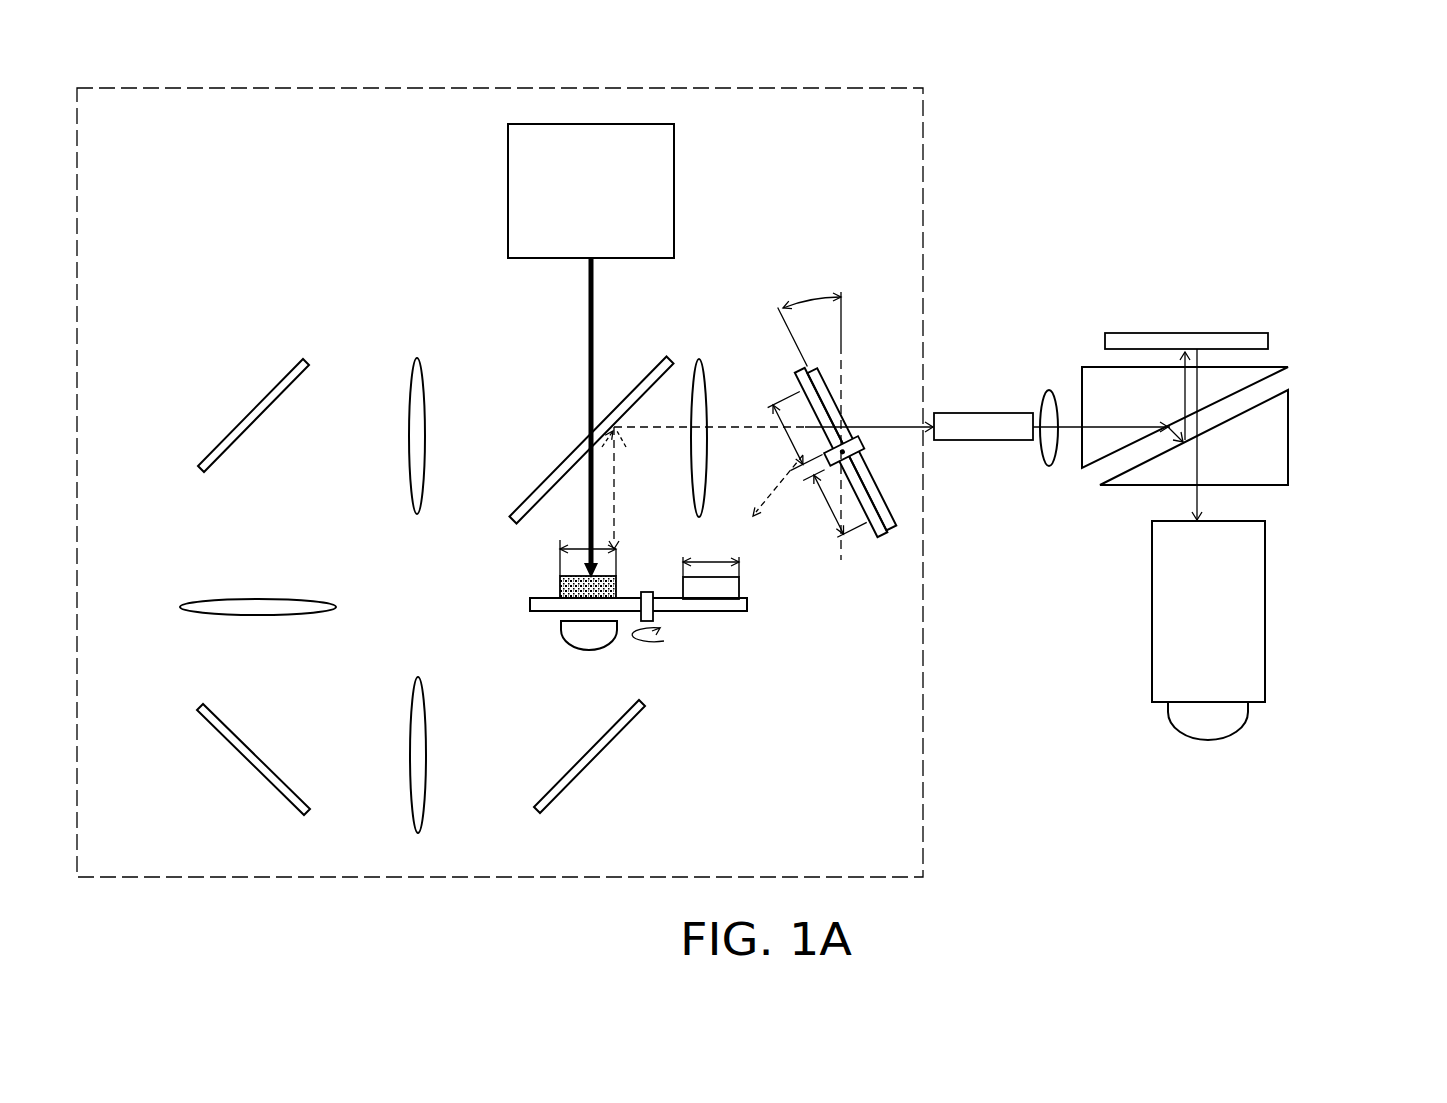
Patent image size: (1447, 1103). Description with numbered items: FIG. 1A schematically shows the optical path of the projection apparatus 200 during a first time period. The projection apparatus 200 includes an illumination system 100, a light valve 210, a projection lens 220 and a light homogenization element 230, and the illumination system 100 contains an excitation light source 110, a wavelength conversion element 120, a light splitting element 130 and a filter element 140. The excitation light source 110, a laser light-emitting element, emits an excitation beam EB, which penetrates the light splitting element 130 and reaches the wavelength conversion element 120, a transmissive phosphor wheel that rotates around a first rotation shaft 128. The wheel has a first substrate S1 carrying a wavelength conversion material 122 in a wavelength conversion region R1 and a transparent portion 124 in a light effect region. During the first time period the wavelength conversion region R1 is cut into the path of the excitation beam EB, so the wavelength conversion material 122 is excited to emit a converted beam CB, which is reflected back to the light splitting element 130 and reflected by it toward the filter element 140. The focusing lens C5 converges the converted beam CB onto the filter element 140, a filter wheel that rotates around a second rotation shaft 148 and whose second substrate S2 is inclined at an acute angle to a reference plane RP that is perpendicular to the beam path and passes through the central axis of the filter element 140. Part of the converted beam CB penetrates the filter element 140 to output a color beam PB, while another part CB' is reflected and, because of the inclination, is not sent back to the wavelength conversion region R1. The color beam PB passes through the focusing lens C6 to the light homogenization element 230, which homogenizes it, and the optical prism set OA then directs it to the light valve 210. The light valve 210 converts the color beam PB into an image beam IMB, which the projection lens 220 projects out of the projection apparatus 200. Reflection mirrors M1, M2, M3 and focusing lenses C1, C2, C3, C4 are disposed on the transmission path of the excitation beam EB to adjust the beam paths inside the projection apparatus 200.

The illumination system 100 is at (858, 88).
The excitation light source 110 is at (676, 186).
The wavelength conversion element 120 is at (669, 640).
The wavelength conversion material 122 is at (560, 578).
The transparent portion 124 is at (734, 590).
The first rotation shaft 128 is at (667, 620).
The light splitting element 130 is at (663, 357).
The filter element 140 is at (856, 469).
The second rotation shaft 148 is at (858, 452).
The projection apparatus 200 is at (1333, 200).
The light valve 210 is at (1232, 334).
The projection lens 220 is at (1262, 620).
The light homogenization element 230 is at (960, 412).
The excitation beam EB is at (588, 308).
The converted beam CB is at (703, 488).
The reflected part of the converted beam CB' is at (759, 486).
The first substrate S1 is at (530, 606).
The tilted axis S2 is at (815, 352).
The reference plane RP is at (845, 372).
The color beam PB is at (883, 427).
The optical prism set OA is at (1272, 430).
The image beam IMB is at (1198, 500).
The wavelength conversion region R1 is at (573, 548).
The reflection mirror M1 is at (598, 757).
The reflection mirror M2 is at (237, 755).
The reflection mirror M3 is at (251, 413).
The focusing lens C1 is at (415, 365).
The focusing lens C2 is at (587, 648).
The focusing lens C3 is at (415, 742).
The focusing lens C4 is at (180, 606).
The focusing lens C5 is at (700, 362).
The focusing lens C6 is at (1052, 390).